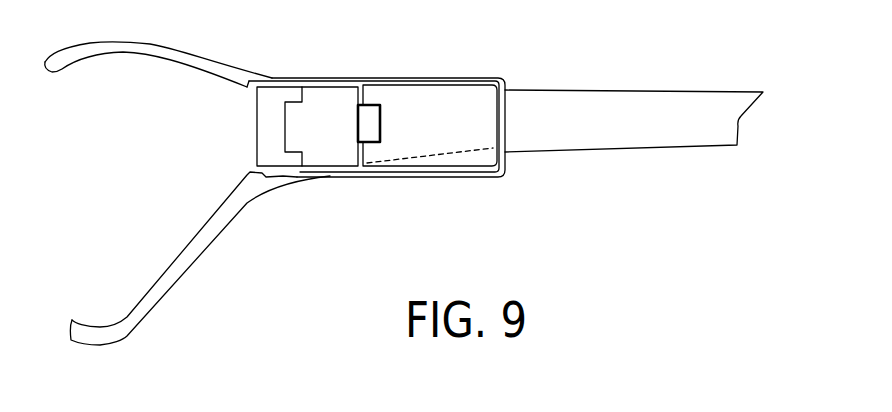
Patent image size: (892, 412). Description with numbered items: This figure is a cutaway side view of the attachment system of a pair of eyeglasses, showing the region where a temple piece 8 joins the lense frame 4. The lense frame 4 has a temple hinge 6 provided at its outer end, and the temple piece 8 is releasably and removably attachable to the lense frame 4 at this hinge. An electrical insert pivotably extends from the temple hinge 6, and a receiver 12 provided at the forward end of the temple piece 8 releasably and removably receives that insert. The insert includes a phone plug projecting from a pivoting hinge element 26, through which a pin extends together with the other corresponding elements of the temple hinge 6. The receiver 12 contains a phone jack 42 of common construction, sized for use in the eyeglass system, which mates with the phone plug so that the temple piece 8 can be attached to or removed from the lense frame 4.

The lense frame 4 is at (133, 322).
The temple hinge 6 is at (277, 97).
The pivoting hinge element 26 is at (318, 108).
The receiver 12 is at (438, 88).
The phone jack 42 is at (423, 110).
The temple piece 8 is at (637, 113).